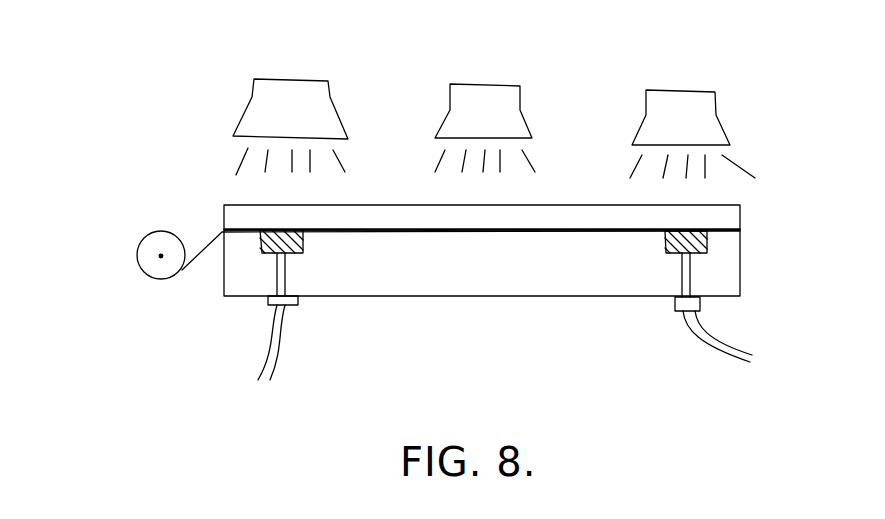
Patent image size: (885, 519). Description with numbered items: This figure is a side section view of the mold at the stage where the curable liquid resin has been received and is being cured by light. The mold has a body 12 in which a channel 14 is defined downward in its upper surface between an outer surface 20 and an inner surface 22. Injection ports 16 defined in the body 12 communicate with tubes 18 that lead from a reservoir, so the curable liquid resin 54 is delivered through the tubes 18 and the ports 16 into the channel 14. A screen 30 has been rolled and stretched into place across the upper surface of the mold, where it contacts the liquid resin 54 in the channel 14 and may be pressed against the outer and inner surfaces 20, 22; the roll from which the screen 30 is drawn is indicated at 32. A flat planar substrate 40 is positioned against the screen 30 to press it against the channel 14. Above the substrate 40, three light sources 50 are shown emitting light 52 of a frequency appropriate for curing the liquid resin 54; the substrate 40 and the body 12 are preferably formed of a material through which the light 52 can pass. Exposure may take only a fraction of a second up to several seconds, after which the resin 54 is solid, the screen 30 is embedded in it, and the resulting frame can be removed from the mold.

The body 12 is at (503, 275).
The channel 14 is at (303, 255).
The injection ports 16 is at (290, 262).
The tubes 18 is at (277, 362).
The outer surface 20 is at (215, 237).
The inner surface 22 is at (435, 232).
The screen 30 is at (207, 240).
The film roll 32 is at (140, 284).
The substrate 40 is at (741, 212).
The light sources 50 is at (304, 92).
The light 52 is at (205, 158).
The liquid resin 54 is at (262, 255).